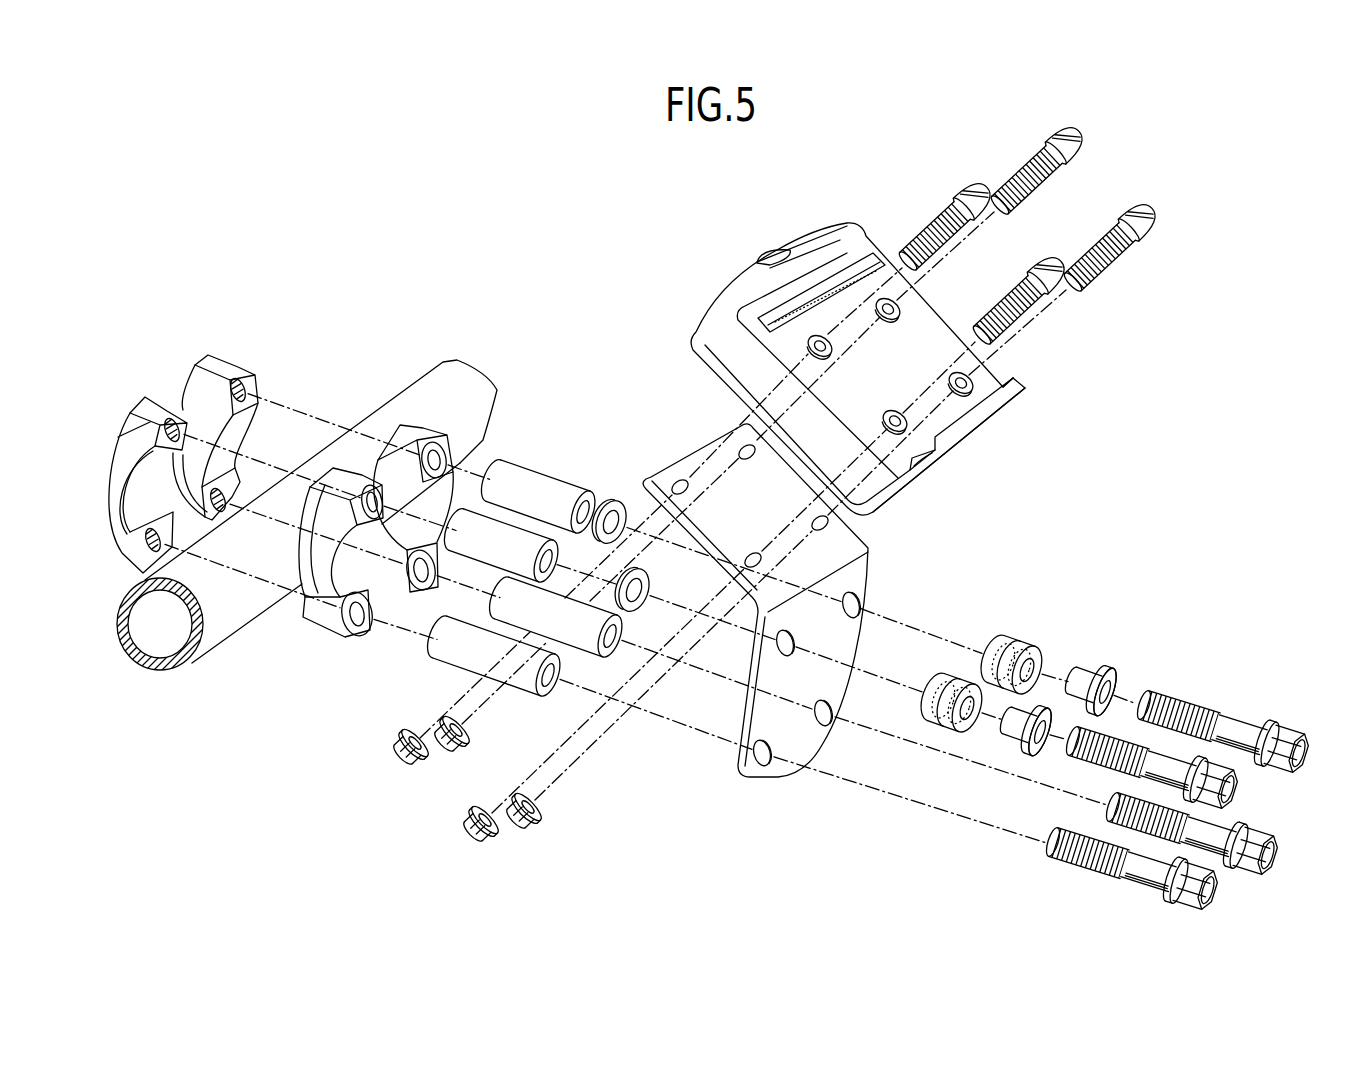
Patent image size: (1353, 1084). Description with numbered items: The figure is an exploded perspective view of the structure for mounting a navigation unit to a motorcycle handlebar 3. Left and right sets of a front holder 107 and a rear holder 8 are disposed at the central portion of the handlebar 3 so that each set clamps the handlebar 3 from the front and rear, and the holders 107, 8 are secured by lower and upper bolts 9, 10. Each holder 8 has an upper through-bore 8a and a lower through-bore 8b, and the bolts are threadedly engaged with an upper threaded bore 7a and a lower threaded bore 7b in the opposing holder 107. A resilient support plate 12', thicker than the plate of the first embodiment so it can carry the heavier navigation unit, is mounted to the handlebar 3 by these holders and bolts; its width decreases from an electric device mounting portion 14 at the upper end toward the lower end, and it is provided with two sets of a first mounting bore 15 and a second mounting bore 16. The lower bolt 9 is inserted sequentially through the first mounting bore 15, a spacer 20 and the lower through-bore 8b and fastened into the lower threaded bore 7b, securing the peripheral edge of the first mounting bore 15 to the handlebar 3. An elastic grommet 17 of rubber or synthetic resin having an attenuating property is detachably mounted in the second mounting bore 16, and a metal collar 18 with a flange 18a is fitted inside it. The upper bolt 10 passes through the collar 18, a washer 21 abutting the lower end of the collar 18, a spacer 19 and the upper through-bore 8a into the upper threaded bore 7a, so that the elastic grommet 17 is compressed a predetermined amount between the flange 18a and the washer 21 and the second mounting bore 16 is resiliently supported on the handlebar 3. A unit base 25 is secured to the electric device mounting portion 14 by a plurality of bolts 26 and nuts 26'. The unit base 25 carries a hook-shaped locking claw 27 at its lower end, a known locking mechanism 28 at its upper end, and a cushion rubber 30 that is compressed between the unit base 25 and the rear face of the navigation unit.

The handlebar 3 is at (447, 372).
The front holder 107 is at (217, 357).
The upper threaded bore 7a is at (250, 382).
The lower threaded bore 7b is at (223, 513).
The rear holder 8 is at (402, 428).
The upper through-bore 8a is at (435, 462).
The lower through-bore 8b is at (423, 573).
The spacer 19 is at (552, 500).
The spacer 20 is at (517, 601).
The washer 21 is at (649, 590).
The nuts 26' is at (465, 810).
The electric device mounting portion 14 is at (731, 484).
The resilient support plate 12' is at (865, 559).
The second mounting bore 16 is at (790, 645).
The first mounting bore 15 is at (765, 758).
The unit base 25 is at (845, 235).
The locking mechanism 28 is at (772, 253).
The cushion rubber 30 is at (778, 312).
The locking claw 27 is at (975, 413).
The bolts 26 is at (1028, 234).
The elastic grommet 17 is at (945, 688).
The metal collar 18 is at (1037, 715).
The flange 18a is at (1110, 690).
The bolt 10 is at (1168, 775).
The bolt 9 is at (1200, 848).